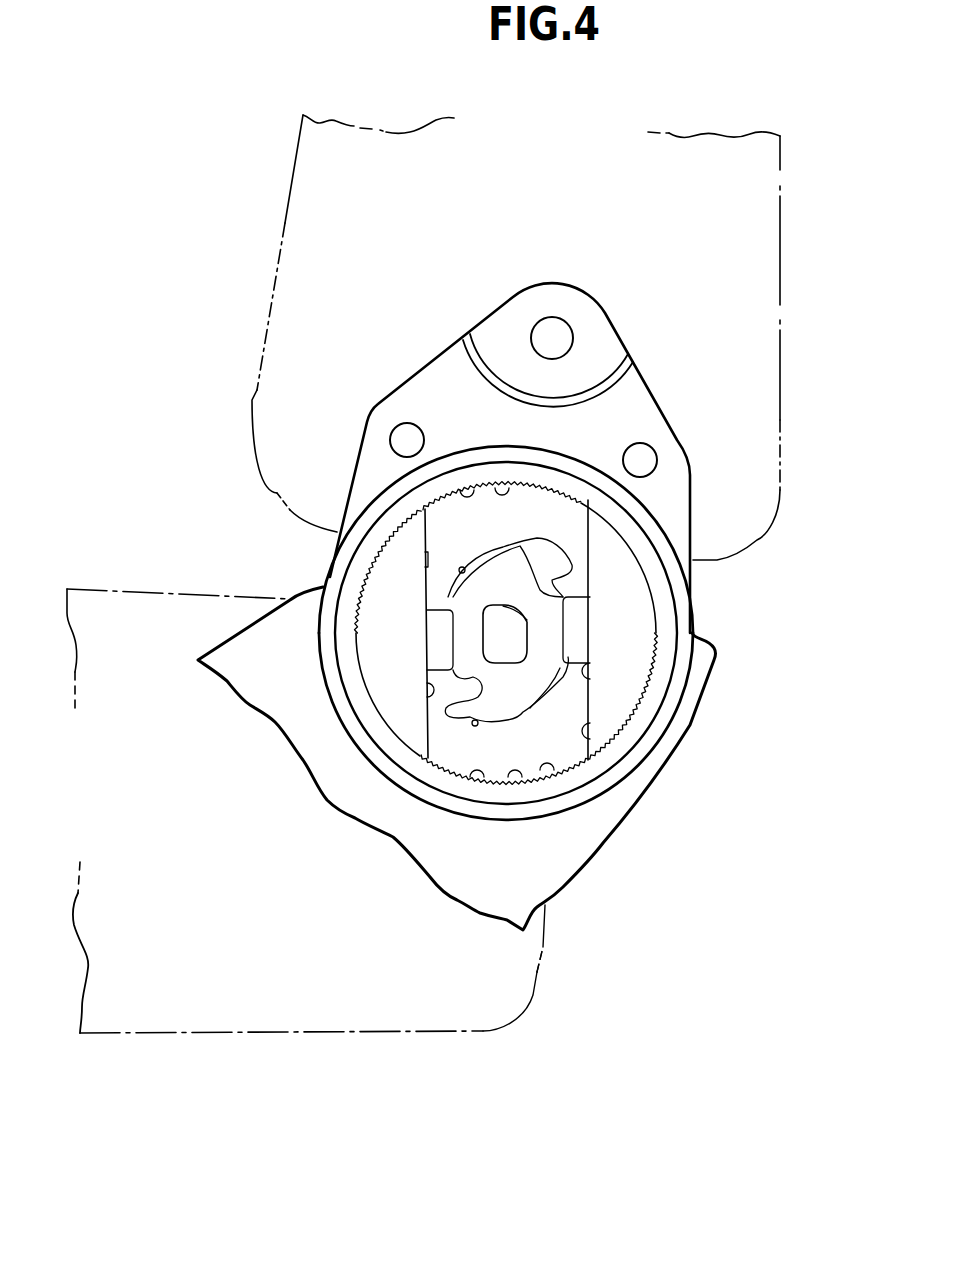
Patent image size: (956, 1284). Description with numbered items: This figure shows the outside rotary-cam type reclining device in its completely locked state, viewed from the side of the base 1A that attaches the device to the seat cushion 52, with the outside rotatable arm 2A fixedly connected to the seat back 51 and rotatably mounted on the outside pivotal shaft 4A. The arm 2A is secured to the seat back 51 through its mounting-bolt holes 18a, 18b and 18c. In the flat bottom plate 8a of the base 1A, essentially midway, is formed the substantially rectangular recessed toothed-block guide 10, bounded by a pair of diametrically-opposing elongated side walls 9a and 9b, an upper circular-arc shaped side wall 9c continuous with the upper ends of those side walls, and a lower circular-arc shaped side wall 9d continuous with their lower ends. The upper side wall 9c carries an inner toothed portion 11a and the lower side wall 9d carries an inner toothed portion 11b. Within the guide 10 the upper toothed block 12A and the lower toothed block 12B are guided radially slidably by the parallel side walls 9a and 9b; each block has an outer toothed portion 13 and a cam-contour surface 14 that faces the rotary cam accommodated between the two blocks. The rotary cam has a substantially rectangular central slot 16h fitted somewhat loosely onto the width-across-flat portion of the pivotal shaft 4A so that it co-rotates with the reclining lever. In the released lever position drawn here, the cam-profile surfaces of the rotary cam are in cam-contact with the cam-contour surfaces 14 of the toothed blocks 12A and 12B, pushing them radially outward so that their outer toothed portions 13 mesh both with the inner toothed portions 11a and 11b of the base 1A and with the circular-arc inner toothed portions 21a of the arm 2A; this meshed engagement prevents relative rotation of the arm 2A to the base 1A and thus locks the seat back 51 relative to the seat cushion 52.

The seat back 51 is at (768, 262).
The seat cushion 52 is at (247, 1015).
The base 1A is at (250, 688).
The outside rotatable arm 2A is at (600, 359).
The mounting-bolt hole 18a is at (405, 438).
The mounting-bolt hole 18b is at (642, 458).
The mounting-bolt hole 18c is at (554, 336).
The upper toothed block 12A is at (567, 525).
The lower toothed block 12B is at (557, 752).
The outer toothed portion 13 is at (540, 478).
The recessed toothed-block guide 10 is at (603, 750).
The inner toothed portion 11a is at (510, 483).
The inner toothed portion 11b is at (527, 780).
The elongated side wall 9a is at (432, 700).
The elongated side wall 9b is at (595, 685).
The upper circular-arc shaped side wall 9c is at (470, 483).
The lower circular-arc shaped side wall 9d is at (483, 762).
The outside pivotal shaft 4A is at (497, 639).
The central slot 16h is at (527, 624).
The cam-contour surface 14 is at (459, 568).
The flat bottom plate 8a is at (445, 737).
The inner toothed portion 21a is at (535, 815).